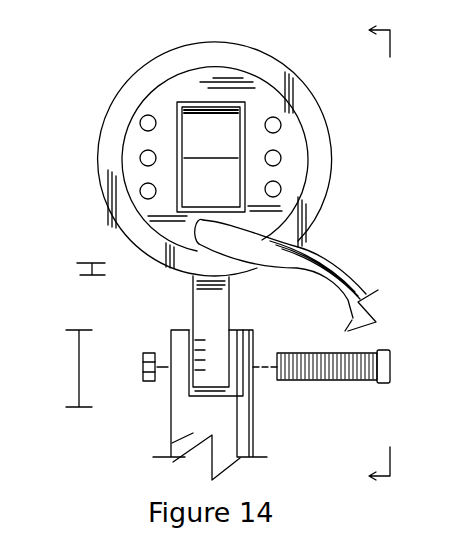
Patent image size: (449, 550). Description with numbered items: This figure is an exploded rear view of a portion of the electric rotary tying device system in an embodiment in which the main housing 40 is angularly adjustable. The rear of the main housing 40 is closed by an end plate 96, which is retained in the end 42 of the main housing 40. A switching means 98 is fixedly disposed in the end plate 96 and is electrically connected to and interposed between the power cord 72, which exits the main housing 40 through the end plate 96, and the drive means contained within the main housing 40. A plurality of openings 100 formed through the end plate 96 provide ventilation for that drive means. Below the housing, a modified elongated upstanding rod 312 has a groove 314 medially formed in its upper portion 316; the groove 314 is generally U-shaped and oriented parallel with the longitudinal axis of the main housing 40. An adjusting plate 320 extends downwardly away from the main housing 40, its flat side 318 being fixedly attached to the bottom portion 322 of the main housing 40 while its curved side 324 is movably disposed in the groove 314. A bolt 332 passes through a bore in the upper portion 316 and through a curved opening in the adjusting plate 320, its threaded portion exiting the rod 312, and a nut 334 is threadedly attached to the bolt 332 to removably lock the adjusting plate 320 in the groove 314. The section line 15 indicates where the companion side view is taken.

The section line 15— 15 is at (366, 255).
The main housing 40 is at (281, 62).
The end 42 is at (152, 68).
The power cord 72 is at (317, 250).
The end plate 96 is at (160, 93).
The switching means 98 is at (213, 103).
The openings 100 is at (141, 127).
The modified elongated upstanding rod 312 is at (171, 450).
The groove 314 is at (225, 395).
The upper portion 316 is at (79, 365).
The flat side 318 is at (192, 278).
The adjusting plate 320 is at (230, 290).
The bottom portion 322 is at (80, 264).
The curved side 324 is at (196, 379).
The bolt 332 is at (357, 385).
The nut 334 is at (148, 352).